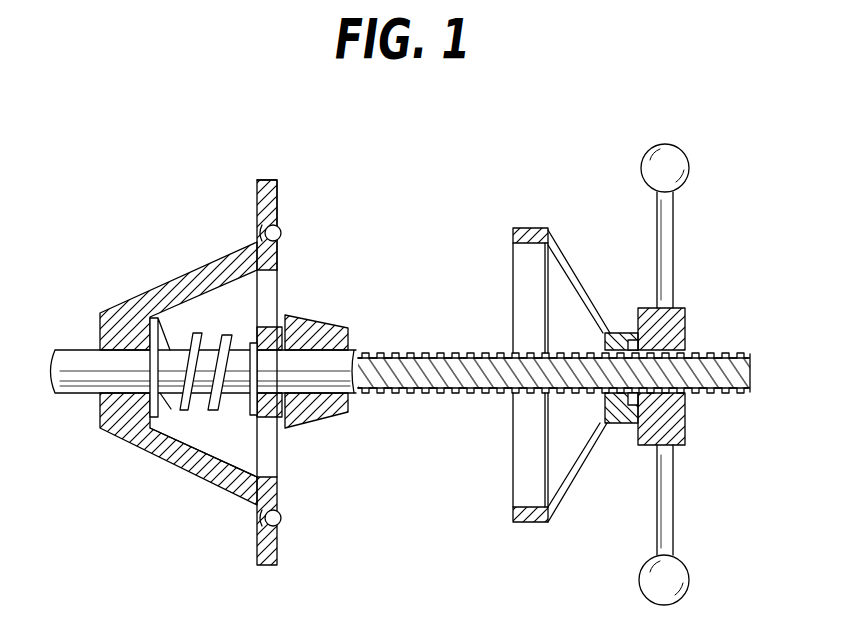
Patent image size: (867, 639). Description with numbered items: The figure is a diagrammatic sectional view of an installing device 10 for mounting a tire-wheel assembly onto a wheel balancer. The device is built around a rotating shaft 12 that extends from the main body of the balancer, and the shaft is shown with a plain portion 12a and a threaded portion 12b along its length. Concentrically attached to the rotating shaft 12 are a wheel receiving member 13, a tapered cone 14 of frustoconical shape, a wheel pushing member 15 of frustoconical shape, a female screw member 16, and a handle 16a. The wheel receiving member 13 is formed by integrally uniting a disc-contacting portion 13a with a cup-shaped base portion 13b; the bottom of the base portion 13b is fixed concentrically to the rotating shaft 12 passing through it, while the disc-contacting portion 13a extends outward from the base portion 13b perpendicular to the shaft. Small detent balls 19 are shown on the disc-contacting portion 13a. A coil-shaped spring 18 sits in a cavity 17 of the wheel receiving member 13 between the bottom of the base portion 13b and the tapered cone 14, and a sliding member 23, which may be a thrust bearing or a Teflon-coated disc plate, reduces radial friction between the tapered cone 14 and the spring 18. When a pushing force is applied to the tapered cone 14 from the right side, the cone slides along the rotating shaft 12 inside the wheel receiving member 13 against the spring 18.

The installing device 10 is at (711, 273).
The rotating shaft 12 is at (75, 352).
The threaded portion of rod 12a is at (753, 370).
The threads 12b is at (710, 393).
The wheel receiving member 13 is at (263, 180).
The disc-contacting portion 13a is at (277, 193).
The cup-shaped base portion 13b is at (183, 277).
The tapered cone 14 is at (338, 326).
The wheel pushing member 15 is at (527, 228).
The female screw member 16 is at (685, 330).
The handle 16a is at (690, 170).
The cavity 17 is at (215, 433).
The coil-shaped spring 18 is at (173, 412).
The ball detent 19 is at (282, 229).
The sliding member 23 is at (262, 328).